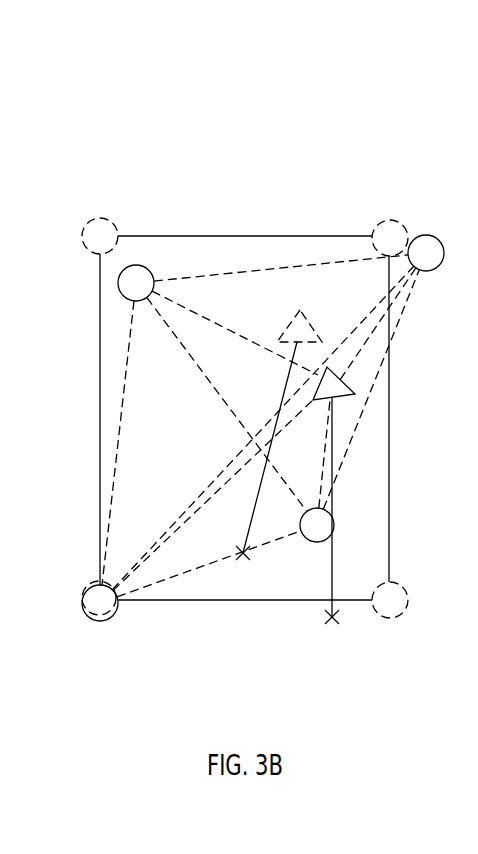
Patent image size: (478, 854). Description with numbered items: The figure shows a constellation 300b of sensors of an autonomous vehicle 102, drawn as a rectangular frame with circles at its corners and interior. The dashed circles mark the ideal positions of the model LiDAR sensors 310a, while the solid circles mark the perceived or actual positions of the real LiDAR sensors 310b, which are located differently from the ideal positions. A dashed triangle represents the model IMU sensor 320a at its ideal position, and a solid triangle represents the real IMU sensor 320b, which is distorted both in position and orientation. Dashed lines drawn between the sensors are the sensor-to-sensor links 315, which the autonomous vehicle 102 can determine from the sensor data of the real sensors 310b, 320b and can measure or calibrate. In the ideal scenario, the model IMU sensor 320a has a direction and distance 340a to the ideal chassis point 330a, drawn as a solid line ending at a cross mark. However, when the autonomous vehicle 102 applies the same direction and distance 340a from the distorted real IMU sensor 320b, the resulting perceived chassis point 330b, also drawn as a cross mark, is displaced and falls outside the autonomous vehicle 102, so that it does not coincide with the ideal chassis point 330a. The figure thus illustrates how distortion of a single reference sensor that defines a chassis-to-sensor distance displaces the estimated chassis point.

The constellation 300b is at (68, 46).
The model LiDAR sensors 310a is at (100, 237).
The real LiDAR sensors 310b is at (424, 256).
The model IMU sensor 320a is at (303, 328).
The real IMU sensor 320b is at (332, 382).
The ideal chassis point 330a is at (244, 556).
The perceived chassis point 330b is at (340, 618).
The direction and distance 340a is at (287, 387).
The sensor-to-sensor links 315 is at (170, 580).
The autonomous vehicle 102 is at (381, 589).